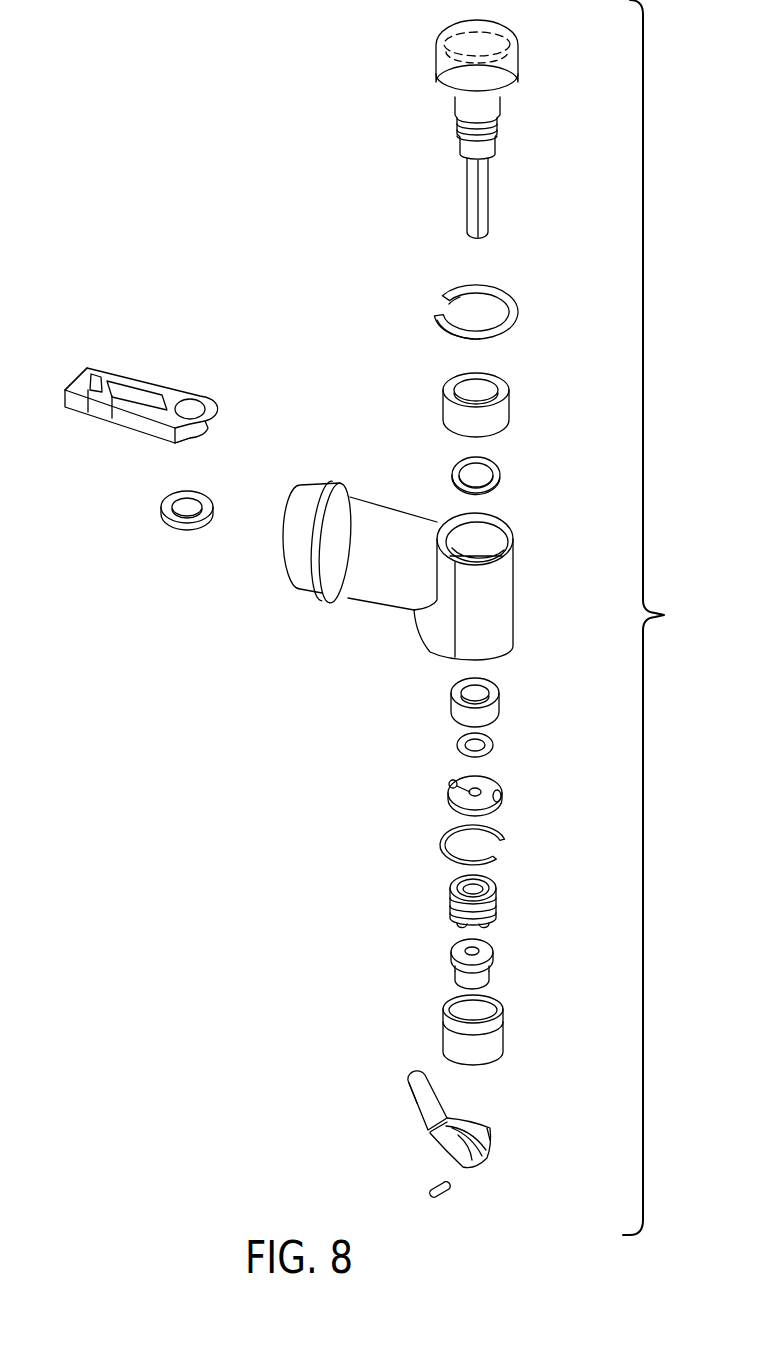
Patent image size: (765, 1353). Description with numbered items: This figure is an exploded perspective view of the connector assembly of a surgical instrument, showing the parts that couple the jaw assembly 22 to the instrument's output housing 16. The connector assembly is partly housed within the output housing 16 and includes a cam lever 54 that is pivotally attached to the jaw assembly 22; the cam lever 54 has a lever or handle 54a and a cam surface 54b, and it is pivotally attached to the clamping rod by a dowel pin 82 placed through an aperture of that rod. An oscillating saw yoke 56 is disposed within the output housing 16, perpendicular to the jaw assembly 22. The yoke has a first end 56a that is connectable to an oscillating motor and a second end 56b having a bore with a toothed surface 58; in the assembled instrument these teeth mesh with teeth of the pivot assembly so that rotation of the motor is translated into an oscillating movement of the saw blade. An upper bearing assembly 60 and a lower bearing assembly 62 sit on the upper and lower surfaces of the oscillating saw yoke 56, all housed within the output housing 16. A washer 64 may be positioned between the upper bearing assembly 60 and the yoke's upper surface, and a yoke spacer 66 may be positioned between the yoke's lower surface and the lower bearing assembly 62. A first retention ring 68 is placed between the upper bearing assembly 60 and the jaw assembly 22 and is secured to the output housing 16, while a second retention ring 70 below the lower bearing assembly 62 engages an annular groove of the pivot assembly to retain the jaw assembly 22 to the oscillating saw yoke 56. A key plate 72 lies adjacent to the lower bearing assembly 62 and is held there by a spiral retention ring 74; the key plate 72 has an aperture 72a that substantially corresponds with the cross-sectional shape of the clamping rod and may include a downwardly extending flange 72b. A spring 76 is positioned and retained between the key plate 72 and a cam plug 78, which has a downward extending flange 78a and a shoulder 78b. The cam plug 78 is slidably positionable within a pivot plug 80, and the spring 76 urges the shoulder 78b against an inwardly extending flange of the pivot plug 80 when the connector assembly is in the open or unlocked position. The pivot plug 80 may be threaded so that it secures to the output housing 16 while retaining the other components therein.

The jaw assembly 22 is at (532, 106).
The first retention ring 68 is at (506, 305).
The upper bearing assembly 60 is at (503, 414).
The washer 64 is at (499, 470).
The output housing 16 is at (500, 598).
The oscillating saw yoke 56 is at (136, 382).
The first end 56a is at (92, 366).
The second end 56b is at (198, 425).
The toothed surface 58 is at (206, 401).
The yoke spacer 66 is at (208, 497).
The lower bearing assembly 62 is at (497, 693).
The second retention ring 70 is at (489, 740).
The key plate 72 is at (494, 785).
The aperture 72a is at (449, 782).
The downwardly extending flange 72b is at (451, 808).
The spiral retention ring 74 is at (507, 838).
The spring 76 is at (496, 885).
The cam plug 78 is at (492, 948).
The downward extending flange 78a is at (453, 970).
The shoulder 78b is at (496, 958).
The pivot plug 80 is at (506, 1018).
The cam lever 54 is at (426, 1136).
The handle 54a is at (411, 1104).
The cam surface 54b is at (491, 1128).
The dowel pin 82 is at (449, 1190).